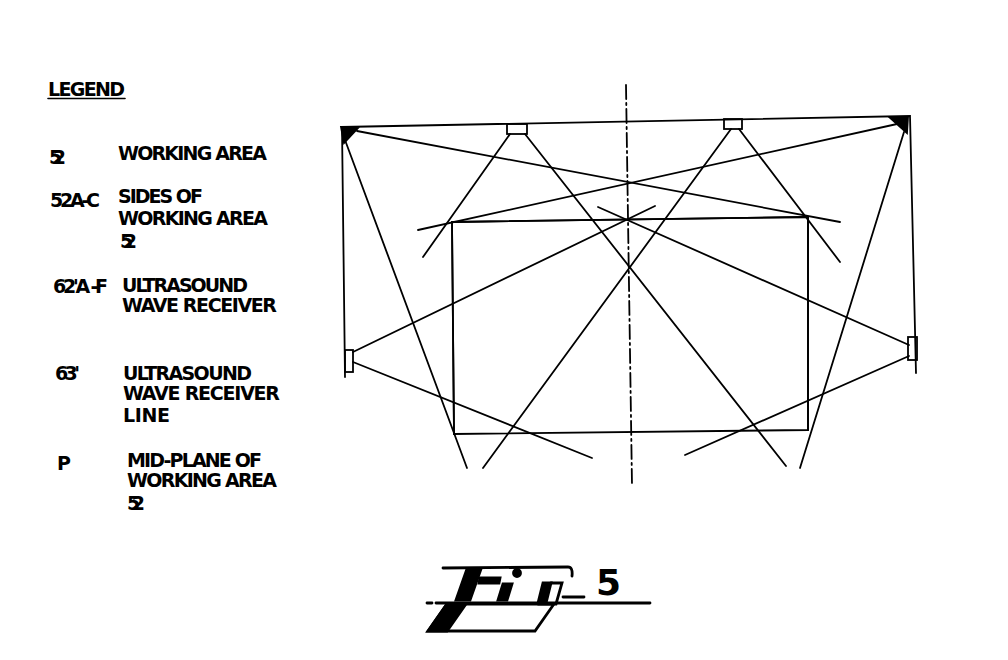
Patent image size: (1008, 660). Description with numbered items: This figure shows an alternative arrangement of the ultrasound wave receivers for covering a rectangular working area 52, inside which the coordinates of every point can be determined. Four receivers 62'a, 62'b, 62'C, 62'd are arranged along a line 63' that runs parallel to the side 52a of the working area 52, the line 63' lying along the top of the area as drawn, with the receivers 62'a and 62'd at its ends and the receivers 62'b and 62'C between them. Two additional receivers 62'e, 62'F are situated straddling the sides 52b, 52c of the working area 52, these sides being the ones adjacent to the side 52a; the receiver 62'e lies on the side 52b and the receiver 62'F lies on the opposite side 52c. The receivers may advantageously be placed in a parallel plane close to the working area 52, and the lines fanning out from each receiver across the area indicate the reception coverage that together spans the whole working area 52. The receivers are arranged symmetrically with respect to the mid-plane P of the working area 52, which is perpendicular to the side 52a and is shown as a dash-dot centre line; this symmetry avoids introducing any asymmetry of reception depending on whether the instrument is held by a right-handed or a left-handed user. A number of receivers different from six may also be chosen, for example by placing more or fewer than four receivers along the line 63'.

The working area 52 is at (728, 302).
The side of working area 52a is at (708, 219).
The side of working area 52b is at (453, 382).
The side of working area 52c is at (808, 374).
The ultrasound wave receiver 62'a is at (569, 271).
The ultrasound wave receiver 62'b is at (604, 257).
The ultrasound wave receiver 62'C is at (661, 262).
The ultrasound wave receiver 62'd is at (663, 268).
The ultrasound wave receiver 62'e is at (483, 332).
The ultrasound wave receiver 62'F is at (760, 331).
The line 63' is at (629, 201).
The mid-plane of working area P is at (635, 470).